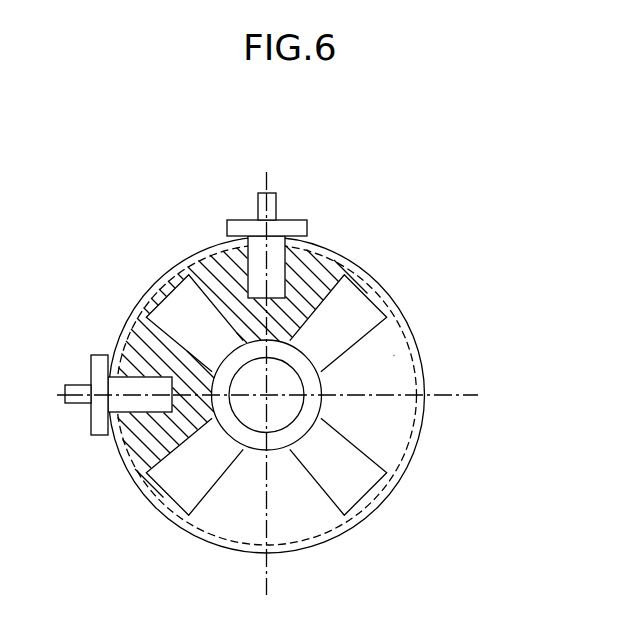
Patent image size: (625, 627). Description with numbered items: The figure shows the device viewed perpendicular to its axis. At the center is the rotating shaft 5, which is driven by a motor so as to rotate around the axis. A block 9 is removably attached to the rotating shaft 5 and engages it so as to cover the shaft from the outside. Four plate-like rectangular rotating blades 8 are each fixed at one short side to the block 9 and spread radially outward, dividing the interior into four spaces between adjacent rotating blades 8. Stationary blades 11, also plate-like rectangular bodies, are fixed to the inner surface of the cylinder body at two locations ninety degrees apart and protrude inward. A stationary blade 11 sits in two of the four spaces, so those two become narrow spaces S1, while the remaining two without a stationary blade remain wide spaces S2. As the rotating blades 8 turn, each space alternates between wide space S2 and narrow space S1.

The rotating shaft 5 is at (302, 390).
The rotating blade 8 is at (183, 310).
The block 9 is at (315, 405).
The stationary blade 11 is at (277, 267).
The narrow space S1 is at (225, 265).
The wide space S2 is at (393, 355).